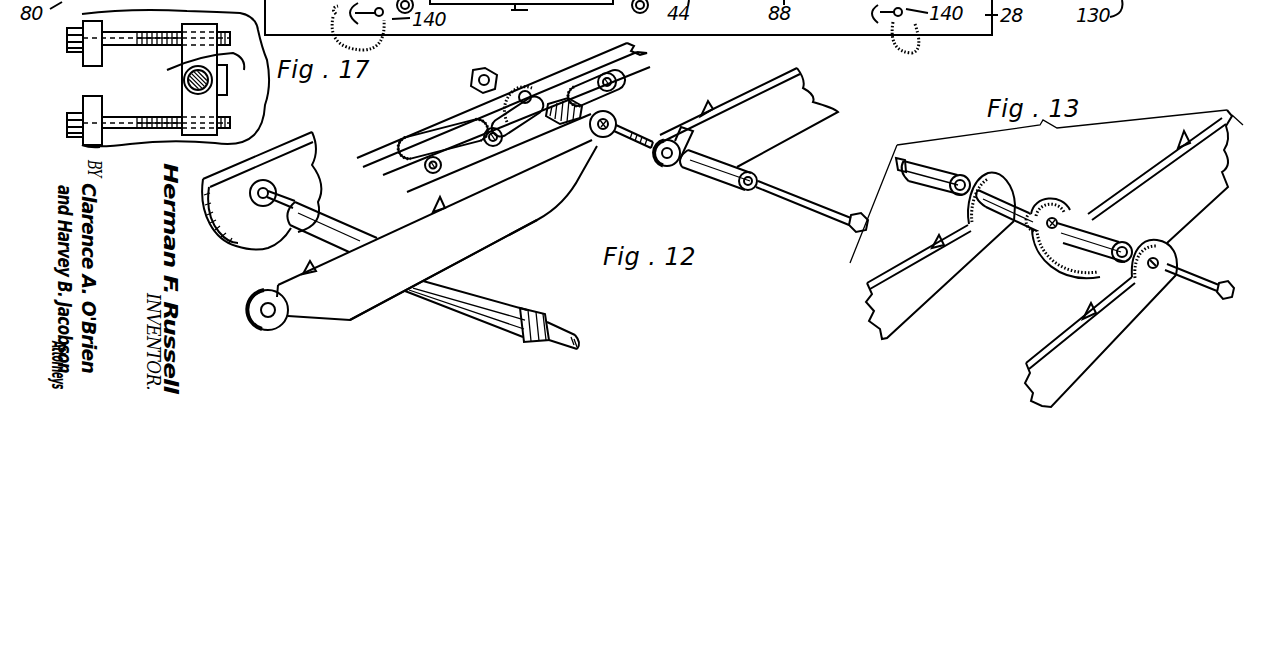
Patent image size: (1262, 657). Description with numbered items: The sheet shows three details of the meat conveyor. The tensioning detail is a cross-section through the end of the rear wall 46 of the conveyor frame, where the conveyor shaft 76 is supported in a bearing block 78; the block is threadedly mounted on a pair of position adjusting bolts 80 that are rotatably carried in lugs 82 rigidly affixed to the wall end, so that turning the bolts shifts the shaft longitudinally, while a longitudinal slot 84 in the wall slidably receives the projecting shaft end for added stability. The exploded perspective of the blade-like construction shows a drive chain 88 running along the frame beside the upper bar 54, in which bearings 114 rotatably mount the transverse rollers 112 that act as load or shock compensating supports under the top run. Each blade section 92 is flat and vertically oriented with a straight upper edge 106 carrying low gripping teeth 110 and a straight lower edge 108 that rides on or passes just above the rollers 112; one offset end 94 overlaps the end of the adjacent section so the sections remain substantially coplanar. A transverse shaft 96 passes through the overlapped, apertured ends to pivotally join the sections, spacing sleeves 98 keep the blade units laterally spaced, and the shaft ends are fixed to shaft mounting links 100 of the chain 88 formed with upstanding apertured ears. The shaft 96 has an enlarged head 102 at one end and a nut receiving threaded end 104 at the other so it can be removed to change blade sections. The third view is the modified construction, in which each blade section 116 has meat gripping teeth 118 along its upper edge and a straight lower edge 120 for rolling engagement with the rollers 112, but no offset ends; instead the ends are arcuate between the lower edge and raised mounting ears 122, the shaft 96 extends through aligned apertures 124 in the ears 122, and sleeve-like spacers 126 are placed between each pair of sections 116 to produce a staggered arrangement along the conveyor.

In FIG. 17, the rear wall 46 is at (247, 126).
In FIG. 17, the conveyor shaft 76 is at (185, 79).
In FIG. 17, the bearing block 78 is at (205, 107).
In FIG. 17, the position adjusting bolt 80 is at (123, 37).
In FIG. 17, the lug 82 is at (92, 103).
In FIG. 17, the longitudinal slot 84 is at (236, 77).
In FIG. 12, the upper bar 54 is at (226, 207).
In FIG. 12, the drive chain 88 is at (427, 120).
In FIG. 12, the blade section 92 is at (757, 86).
In FIG. 12, the offset end 94 is at (668, 167).
In FIG. 12, the shaft 96 is at (800, 197).
In FIG. 13, the shaft 96 is at (1202, 282).
In FIG. 12, the spacing sleeve 98 is at (567, 117).
In FIG. 12, the shaft mounting link 100 is at (504, 97).
In FIG. 12, the enlarged head 102 is at (846, 223).
In FIG. 12, the threaded end 104 is at (550, 100).
In FIG. 12, the upper edge 106 is at (395, 226).
In FIG. 12, the lower edge 108 is at (410, 294).
In FIG. 12, the gripping tooth 110 is at (303, 267).
In FIG. 12, the roller 112 is at (530, 311).
In FIG. 12, the bearing 114 is at (261, 205).
In FIG. 13, the modified blade section 116 is at (1038, 340).
In FIG. 13, the meat gripping tooth 118 is at (1107, 197).
In FIG. 13, the lower edge 120 is at (1212, 196).
In FIG. 13, the mounting ear 122 is at (1053, 205).
In FIG. 13, the aperture 124 is at (1037, 238).
In FIG. 13, the sleeve-like spacer 126 is at (1006, 199).